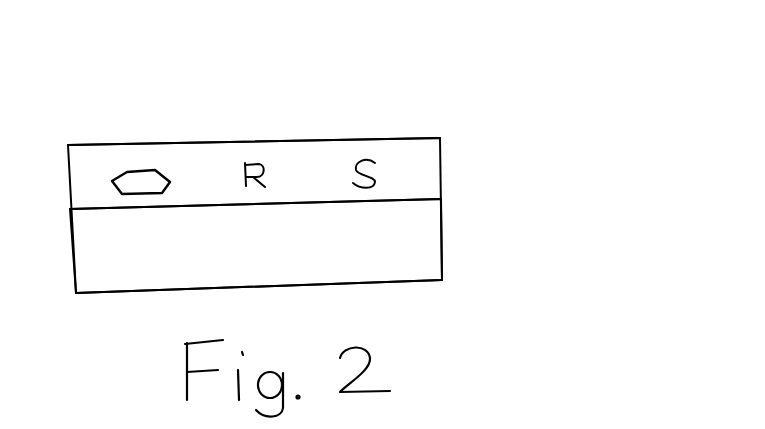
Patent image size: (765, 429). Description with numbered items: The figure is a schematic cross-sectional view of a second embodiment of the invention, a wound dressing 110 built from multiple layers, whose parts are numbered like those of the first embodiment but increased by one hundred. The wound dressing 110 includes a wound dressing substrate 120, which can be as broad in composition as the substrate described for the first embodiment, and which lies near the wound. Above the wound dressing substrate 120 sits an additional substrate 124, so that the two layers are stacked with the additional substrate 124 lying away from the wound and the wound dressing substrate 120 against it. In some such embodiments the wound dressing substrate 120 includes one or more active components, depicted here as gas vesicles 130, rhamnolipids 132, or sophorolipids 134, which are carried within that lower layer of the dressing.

The wound dressing 110 is at (245, 66).
The additional substrate 124 is at (463, 180).
The wound dressing substrate 120 is at (467, 252).
The gas vesicles 130 is at (153, 117).
The rhamnolipids 132 is at (289, 113).
The sophorolipids 134 is at (424, 100).